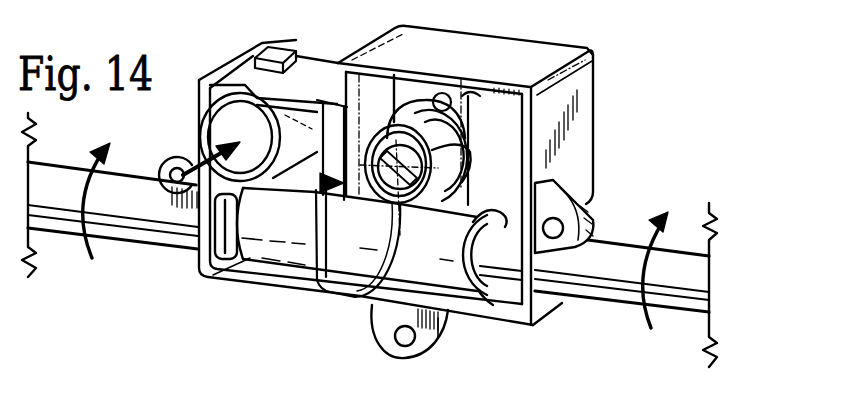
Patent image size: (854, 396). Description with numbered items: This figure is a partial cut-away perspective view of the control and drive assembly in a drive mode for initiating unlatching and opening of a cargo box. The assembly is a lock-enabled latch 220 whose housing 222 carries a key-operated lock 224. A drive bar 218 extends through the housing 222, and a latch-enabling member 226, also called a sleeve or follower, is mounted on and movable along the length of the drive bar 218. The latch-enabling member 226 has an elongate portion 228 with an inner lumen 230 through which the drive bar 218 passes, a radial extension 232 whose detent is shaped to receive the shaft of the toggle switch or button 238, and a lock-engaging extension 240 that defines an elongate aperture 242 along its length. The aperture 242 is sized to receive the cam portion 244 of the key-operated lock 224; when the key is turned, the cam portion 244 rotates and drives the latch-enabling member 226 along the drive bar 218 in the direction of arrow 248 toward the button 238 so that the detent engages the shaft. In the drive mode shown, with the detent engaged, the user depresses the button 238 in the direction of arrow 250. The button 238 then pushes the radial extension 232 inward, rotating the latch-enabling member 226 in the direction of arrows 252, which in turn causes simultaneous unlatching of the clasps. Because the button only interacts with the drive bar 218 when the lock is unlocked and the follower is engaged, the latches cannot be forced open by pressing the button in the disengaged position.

The drive bar 218 is at (616, 242).
The lock-enabled latch 220 is at (651, 46).
The housing 222 is at (540, 57).
The key-operated lock 224 is at (480, 143).
The latch-enabling member 226 is at (267, 250).
The elongate portion 228 is at (447, 268).
The inner lumen 230 is at (476, 263).
The radial extension 232 is at (338, 118).
The button 238 is at (257, 137).
The lock-engaging extension 240 is at (418, 96).
The elongate aperture 242 is at (447, 102).
The cam portion 244 is at (476, 166).
The arrow 248 is at (336, 270).
The arrow 250 is at (183, 161).
The arrows 252 is at (80, 249).